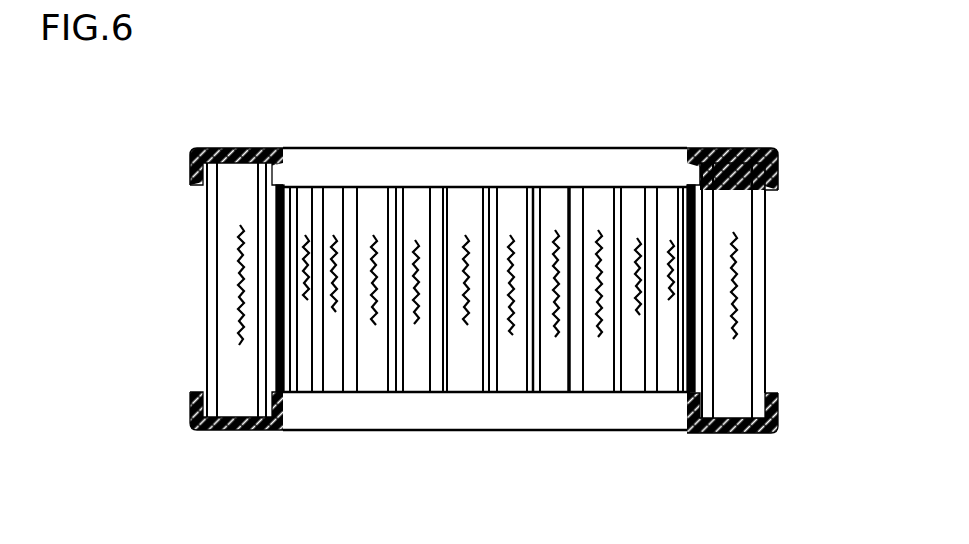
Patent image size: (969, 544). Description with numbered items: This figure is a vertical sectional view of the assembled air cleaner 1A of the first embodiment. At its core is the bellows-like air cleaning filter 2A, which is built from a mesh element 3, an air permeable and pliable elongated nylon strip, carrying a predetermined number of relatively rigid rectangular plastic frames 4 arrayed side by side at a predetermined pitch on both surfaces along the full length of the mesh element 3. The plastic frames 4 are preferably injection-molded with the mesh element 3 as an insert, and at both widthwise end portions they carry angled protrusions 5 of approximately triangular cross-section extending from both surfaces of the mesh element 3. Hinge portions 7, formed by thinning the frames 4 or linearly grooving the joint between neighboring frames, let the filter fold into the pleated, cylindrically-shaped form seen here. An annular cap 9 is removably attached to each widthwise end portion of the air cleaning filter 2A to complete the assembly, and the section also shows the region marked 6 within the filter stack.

The air cleaner 1A is at (595, 118).
The bellows-like air cleaning filter 2A is at (774, 299).
The mesh element 3 is at (640, 350).
The plastic frames 4 is at (566, 394).
The angled protrusions 5 is at (240, 168).
The stack 6 is at (485, 350).
The hinge portions 7 is at (396, 373).
The annular cap 9 is at (770, 152).